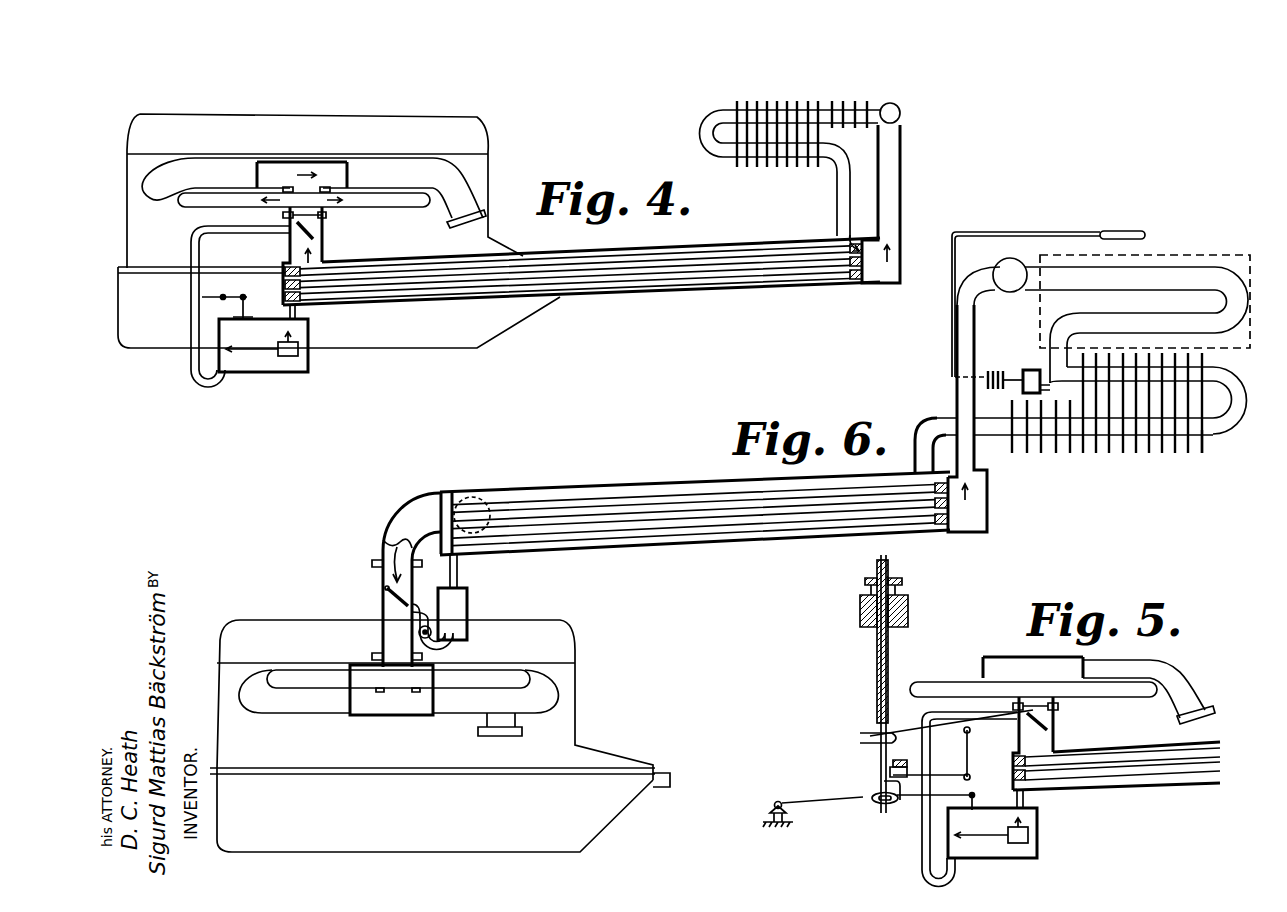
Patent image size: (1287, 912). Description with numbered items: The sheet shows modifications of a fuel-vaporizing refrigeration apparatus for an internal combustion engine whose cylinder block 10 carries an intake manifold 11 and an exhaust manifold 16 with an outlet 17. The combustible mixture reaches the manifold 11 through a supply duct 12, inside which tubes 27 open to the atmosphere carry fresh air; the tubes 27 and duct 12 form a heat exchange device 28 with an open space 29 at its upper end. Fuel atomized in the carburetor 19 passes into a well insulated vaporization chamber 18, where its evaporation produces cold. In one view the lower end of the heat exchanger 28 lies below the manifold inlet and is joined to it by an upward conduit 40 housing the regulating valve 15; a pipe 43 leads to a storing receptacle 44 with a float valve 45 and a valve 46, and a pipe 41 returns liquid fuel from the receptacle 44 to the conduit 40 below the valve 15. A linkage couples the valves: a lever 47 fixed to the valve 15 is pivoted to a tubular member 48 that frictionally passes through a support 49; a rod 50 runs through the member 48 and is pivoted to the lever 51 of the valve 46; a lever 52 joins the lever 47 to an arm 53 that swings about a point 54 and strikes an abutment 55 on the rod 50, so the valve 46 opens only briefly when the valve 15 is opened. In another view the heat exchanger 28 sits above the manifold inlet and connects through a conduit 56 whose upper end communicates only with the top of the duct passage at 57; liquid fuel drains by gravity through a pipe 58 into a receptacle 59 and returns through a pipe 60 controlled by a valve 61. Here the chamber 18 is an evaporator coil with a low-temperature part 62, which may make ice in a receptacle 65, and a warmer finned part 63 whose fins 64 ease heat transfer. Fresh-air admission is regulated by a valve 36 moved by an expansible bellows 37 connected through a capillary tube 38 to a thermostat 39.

In FIG. 4, the cylinder block 10 is at (418, 348).
In FIG. 6, the cylinder block 10 is at (612, 763).
In FIG. 4, the intake manifold 11 is at (202, 200).
In FIG. 6, the intake manifold 11 is at (311, 670).
In FIG. 5, the intake manifold 11 is at (1138, 698).
In FIG. 4, the supply duct 12 is at (692, 287).
In FIG. 6, the supply duct 12 is at (682, 548).
In FIG. 5, the supply duct 12 is at (1142, 790).
In FIG. 4, the regulating valve 15 is at (316, 230).
In FIG. 6, the regulating valve 15 is at (383, 592).
In FIG. 5, the regulating valve 15 is at (1049, 720).
In FIG. 4, the exhaust manifold 16 is at (409, 170).
In FIG. 6, the exhaust manifold 16 is at (292, 714).
In FIG. 5, the exhaust manifold 16 is at (1192, 680).
In FIG. 4, the outlet 17 is at (474, 225).
In FIG. 6, the outlet 17 is at (500, 738).
In FIG. 4, the vaporization chamber 18 is at (733, 116).
In FIG. 6, the vaporization chamber 18 is at (1230, 372).
In FIG. 4, the carburetor 19 is at (901, 114).
In FIG. 6, the carburetor 19 is at (1005, 265).
In FIG. 4, the tubes 27 is at (783, 275).
In FIG. 6, the tubes 27 is at (590, 500).
In FIG. 5, the tubes 27 is at (1097, 757).
In FIG. 4, the heat exchange device 28 is at (604, 300).
In FIG. 6, the heat exchange device 28 is at (680, 481).
In FIG. 5, the heat exchange device 28 is at (1187, 790).
In FIG. 4, the open space 29 is at (888, 272).
In FIG. 6, the open space 29 is at (988, 516).
In FIG. 6, the valve 36 is at (1030, 370).
In FIG. 6, the expansible bellows 37 is at (995, 370).
In FIG. 6, the capillary tube 38 is at (1026, 233).
In FIG. 6, the thermostat 39 is at (1122, 232).
In FIG. 4, the conduit 40 is at (318, 248).
In FIG. 4, the pipe 41 is at (190, 318).
In FIG. 5, the pipe 41 is at (920, 858).
In FIG. 4, the pipe 43 is at (298, 313).
In FIG. 5, the pipe 43 is at (1028, 800).
In FIG. 4, the storing receptacle 44 is at (284, 372).
In FIG. 5, the storing receptacle 44 is at (1032, 858).
In FIG. 4, the float valve 45 is at (306, 342).
In FIG. 5, the float valve 45 is at (1030, 836).
In FIG. 4, the valve 46 is at (248, 316).
In FIG. 5, the valve 46 is at (975, 810).
In FIG. 5, the lever 47 is at (920, 727).
In FIG. 5, the tubular member 48 is at (877, 680).
In FIG. 5, the support 49 is at (905, 600).
In FIG. 5, the rod 50 is at (887, 575).
In FIG. 5, the lever 51 is at (867, 802).
In FIG. 5, the lever 52 is at (970, 752).
In FIG. 5, the arm 53 is at (893, 765).
In FIG. 5, the pivot point 54 is at (912, 770).
In FIG. 5, the abutment 55 is at (888, 805).
In FIG. 6, the conduit 56 is at (381, 548).
In FIG. 6, the communication with top portion of gas passage 57 is at (452, 492).
In FIG. 6, the pipe 58 is at (458, 570).
In FIG. 6, the receptacle 59 is at (468, 607).
In FIG. 6, the pipe 60 is at (455, 650).
In FIG. 6, the valve 61 is at (418, 633).
In FIG. 6, the coil part 62 is at (1213, 268).
In FIG. 6, the coil part 63 is at (1223, 437).
In FIG. 6, the fins 64 is at (1182, 456).
In FIG. 6, the receptacle 65 is at (1175, 255).